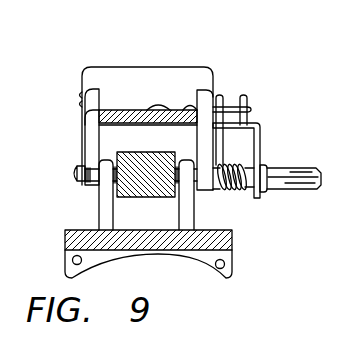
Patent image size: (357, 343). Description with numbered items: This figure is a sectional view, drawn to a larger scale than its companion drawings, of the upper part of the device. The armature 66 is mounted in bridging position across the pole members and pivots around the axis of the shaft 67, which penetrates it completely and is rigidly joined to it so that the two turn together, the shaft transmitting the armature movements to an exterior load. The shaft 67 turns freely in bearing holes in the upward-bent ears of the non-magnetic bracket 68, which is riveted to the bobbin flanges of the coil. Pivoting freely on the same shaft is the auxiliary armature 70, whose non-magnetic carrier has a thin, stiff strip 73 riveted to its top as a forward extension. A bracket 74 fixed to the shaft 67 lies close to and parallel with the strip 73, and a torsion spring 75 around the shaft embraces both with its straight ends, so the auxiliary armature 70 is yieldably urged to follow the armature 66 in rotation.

The auxiliary armature 70 is at (86, 64).
The strip 73 is at (251, 112).
The bracket 74 is at (258, 150).
The torsion spring 75 is at (219, 194).
The shaft 67 is at (290, 189).
The armature 66 is at (140, 191).
The bracket 68 is at (67, 232).